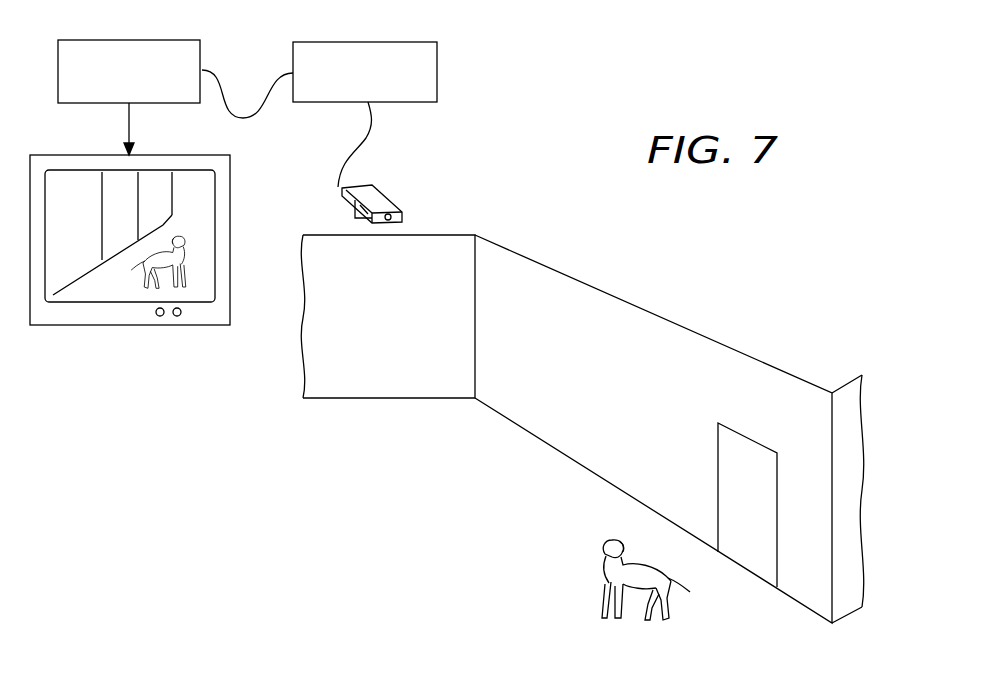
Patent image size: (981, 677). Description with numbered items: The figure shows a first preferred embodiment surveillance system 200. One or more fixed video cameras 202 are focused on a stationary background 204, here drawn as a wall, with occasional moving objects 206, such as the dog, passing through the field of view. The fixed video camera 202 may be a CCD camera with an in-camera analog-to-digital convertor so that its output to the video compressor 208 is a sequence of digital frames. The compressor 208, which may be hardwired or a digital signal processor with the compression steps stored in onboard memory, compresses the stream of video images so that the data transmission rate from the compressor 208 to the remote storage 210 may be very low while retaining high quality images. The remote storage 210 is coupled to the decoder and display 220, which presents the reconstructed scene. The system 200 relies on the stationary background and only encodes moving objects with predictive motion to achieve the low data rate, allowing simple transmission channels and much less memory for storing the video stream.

The surveillance system 200 is at (203, 458).
The fixed video camera 202 is at (380, 196).
The stationary background 204 is at (815, 407).
The moving object 206 is at (582, 562).
The video compressor 208 is at (437, 72).
The remote storage 210 is at (202, 58).
The decoder and display 220 is at (135, 325).